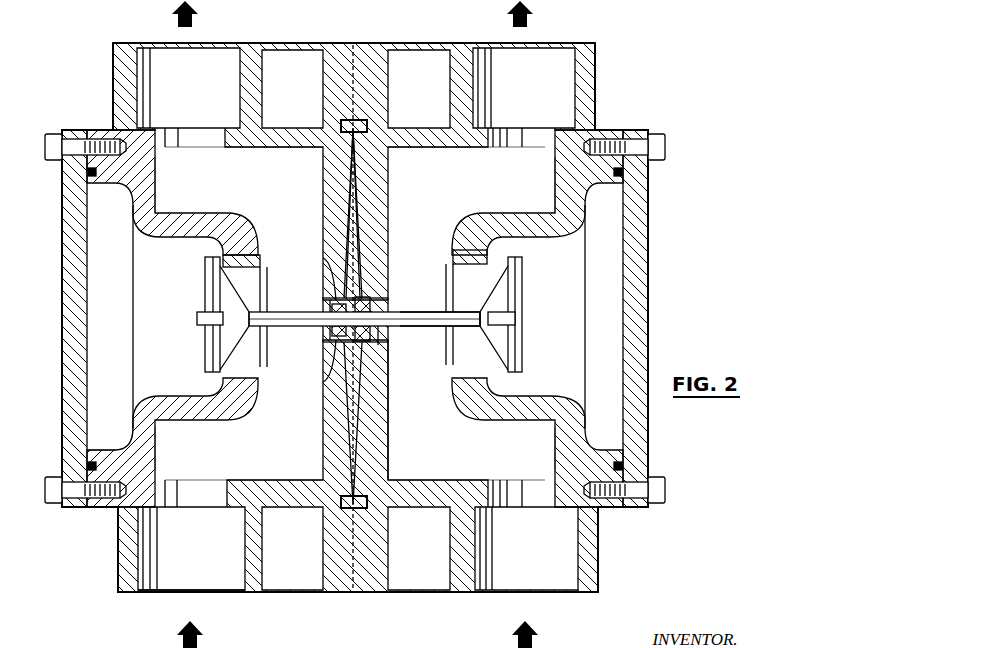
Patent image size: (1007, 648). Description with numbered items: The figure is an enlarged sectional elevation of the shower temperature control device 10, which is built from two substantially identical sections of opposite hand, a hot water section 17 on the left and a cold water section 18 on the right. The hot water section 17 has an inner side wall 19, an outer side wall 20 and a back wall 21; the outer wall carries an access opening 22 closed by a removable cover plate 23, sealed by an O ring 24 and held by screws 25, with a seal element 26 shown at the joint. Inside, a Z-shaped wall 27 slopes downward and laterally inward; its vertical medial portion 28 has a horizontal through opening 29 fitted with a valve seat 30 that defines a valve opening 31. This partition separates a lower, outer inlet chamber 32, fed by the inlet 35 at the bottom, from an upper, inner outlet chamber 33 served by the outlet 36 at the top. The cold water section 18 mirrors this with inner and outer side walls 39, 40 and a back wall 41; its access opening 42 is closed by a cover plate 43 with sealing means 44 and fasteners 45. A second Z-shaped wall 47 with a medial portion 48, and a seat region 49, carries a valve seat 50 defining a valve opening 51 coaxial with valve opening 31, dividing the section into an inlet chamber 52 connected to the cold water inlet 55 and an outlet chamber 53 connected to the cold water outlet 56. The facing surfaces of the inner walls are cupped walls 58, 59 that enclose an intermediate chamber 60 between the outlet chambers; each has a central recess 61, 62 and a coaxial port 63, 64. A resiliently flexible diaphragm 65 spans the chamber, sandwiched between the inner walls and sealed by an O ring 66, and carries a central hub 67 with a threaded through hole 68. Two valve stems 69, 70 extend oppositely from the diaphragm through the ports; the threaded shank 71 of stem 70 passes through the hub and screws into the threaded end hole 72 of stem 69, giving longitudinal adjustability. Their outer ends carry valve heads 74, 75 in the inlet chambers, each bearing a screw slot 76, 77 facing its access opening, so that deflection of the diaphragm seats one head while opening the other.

The temperature control device 10 is at (606, 60).
The hot water section 17 is at (256, 596).
The cold water section 18 is at (598, 563).
The inner side wall 19 is at (330, 453).
The outer side wall 20 is at (145, 546).
The back wall 21 is at (156, 316).
The access opening 22 is at (120, 455).
The cover plate 23 is at (78, 272).
The O ring 24 is at (94, 462).
The screws 25 is at (100, 140).
The gasket 26 is at (92, 172).
The Z-shaped wall 27 is at (196, 224).
The medial portion 28 is at (256, 257).
The through opening 29 is at (256, 370).
The valve seat 30 is at (258, 278).
The valve opening 31 is at (258, 294).
The inlet chamber 32 is at (239, 446).
The outlet chamber 33 is at (239, 180).
The inlet 35 is at (200, 568).
The outlet 36 is at (200, 64).
The inner side wall 39 is at (380, 450).
The outer side wall 40 is at (578, 464).
The back wall 41 is at (471, 446).
The access opening 42 is at (602, 458).
The cover plate 43 is at (640, 252).
The sealing means 44 is at (624, 178).
The fasteners 45 is at (630, 140).
The Z-shaped wall 47 is at (507, 228).
The medial portion 48 is at (452, 258).
The valve seat 49 is at (458, 374).
The valve seat 50 is at (455, 280).
The valve opening 51 is at (455, 293).
The inlet chamber 52 is at (564, 316).
The outlet chamber 53 is at (471, 180).
The cold water inlet 55 is at (540, 566).
The cold water outlet 56 is at (516, 66).
The cupped wall 58 is at (330, 263).
The cupped wall 59 is at (357, 246).
The intermediate chamber 60 is at (360, 268).
The recess 61 is at (335, 300).
The recess 62 is at (370, 290).
The port 63 is at (333, 348).
The port 64 is at (375, 335).
The diaphragm 65 is at (372, 352).
The O ring 66 is at (360, 512).
The hub 67 is at (336, 282).
The threaded through hole 68 is at (375, 300).
The valve stem 69 is at (275, 326).
The valve stem 70 is at (430, 326).
The shank 71 is at (342, 342).
The threaded end hole 72 is at (330, 328).
The valve head 74 is at (208, 277).
The valve head 75 is at (521, 280).
The screw slot 76 is at (208, 320).
The screw slot 77 is at (516, 318).